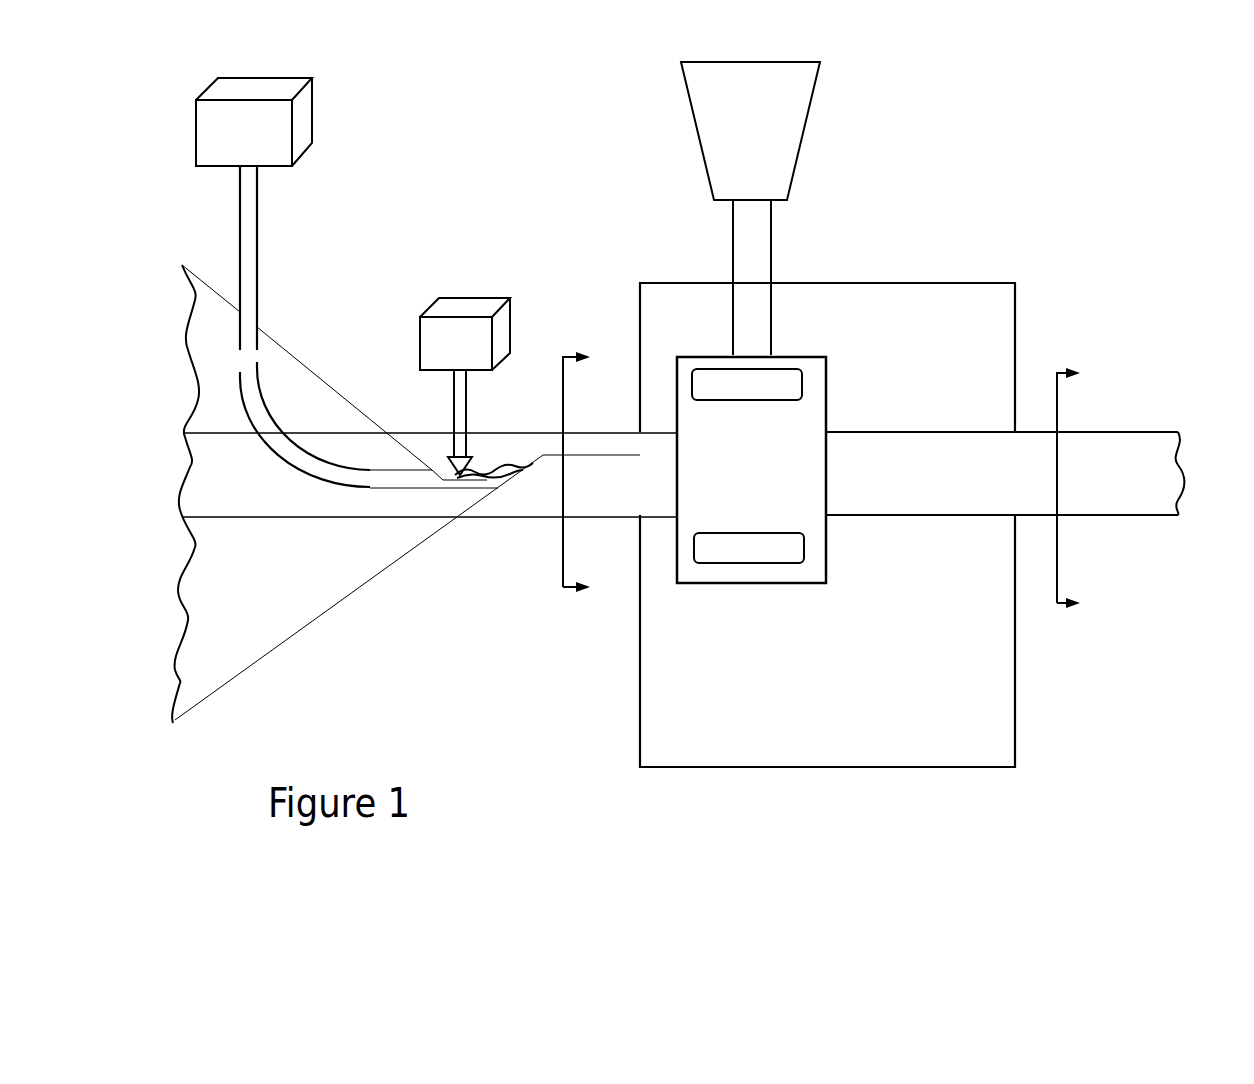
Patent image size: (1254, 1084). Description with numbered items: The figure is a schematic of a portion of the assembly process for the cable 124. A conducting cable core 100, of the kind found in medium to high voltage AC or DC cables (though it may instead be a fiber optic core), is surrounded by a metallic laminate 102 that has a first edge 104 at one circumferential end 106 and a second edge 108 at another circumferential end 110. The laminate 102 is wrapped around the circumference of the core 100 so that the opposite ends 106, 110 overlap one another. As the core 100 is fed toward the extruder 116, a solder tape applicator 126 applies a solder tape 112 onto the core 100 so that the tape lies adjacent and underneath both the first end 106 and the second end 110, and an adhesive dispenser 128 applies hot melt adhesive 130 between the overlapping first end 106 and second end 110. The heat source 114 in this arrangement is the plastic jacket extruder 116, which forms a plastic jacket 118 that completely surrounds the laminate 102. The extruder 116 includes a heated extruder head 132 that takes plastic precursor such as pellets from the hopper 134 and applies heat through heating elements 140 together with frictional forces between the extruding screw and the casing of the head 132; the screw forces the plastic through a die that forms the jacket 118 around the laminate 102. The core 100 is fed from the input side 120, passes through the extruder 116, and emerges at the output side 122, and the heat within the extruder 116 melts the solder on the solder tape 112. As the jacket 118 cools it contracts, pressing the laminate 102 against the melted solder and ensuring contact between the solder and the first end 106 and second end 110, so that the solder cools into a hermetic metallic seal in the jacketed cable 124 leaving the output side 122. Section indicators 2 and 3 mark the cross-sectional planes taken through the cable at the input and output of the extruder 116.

The cable core 100 is at (307, 497).
The metallic laminate 102 is at (230, 568).
The first edge 104 is at (278, 645).
The first circumferential end 106 is at (386, 564).
The second edge 108 is at (282, 347).
The second circumferential end 110 is at (313, 390).
The solder tape 112 is at (252, 293).
The heat source 114 is at (879, 248).
The extruder 116 is at (1039, 158).
The plastic jacket 118 is at (1163, 430).
The input side 120 is at (564, 256).
The output side 122 is at (1121, 264).
The cable 124 is at (1155, 507).
The solder tape applicator 126 is at (312, 110).
The adhesive dispenser 128 is at (443, 305).
The hot melt adhesive 130 is at (485, 467).
The extruder head 132 is at (822, 533).
The hopper 134 is at (800, 93).
The heating elements 140 is at (770, 385).
The section line 2- 2 is at (589, 474).
The section line 3- 3 is at (1078, 491).